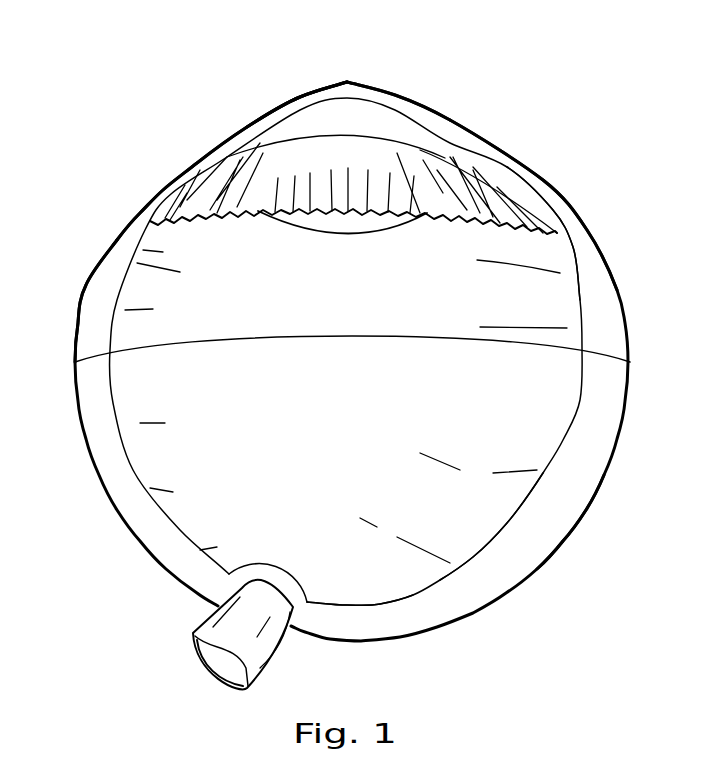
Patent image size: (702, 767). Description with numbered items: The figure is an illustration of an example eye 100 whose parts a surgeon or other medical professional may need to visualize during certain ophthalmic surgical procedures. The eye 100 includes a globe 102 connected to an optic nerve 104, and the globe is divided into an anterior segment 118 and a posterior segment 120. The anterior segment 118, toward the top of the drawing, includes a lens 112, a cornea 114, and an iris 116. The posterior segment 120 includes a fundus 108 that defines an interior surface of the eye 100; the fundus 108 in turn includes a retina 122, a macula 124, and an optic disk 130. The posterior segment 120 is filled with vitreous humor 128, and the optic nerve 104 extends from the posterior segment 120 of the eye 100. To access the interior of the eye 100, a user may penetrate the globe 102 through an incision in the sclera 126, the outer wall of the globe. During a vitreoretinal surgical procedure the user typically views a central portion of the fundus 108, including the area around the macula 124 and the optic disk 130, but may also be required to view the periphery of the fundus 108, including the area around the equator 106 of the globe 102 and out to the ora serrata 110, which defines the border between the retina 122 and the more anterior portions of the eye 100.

The eye 100 is at (130, 79).
The globe 102 is at (113, 503).
The optic nerve 104 is at (193, 642).
The equator 106 is at (352, 344).
The fundus 108 is at (468, 535).
The ora serrata 110 is at (562, 240).
The lens 112 is at (350, 228).
The cornea 114 is at (345, 90).
The iris 116 is at (428, 158).
The anterior segment 118 is at (546, 161).
The posterior segment 120 is at (612, 522).
The retina 122 is at (473, 560).
The macula 124 is at (340, 585).
The sclera 126 is at (93, 287).
The vitreous humor 128 is at (368, 475).
The optic disk 130 is at (258, 550).